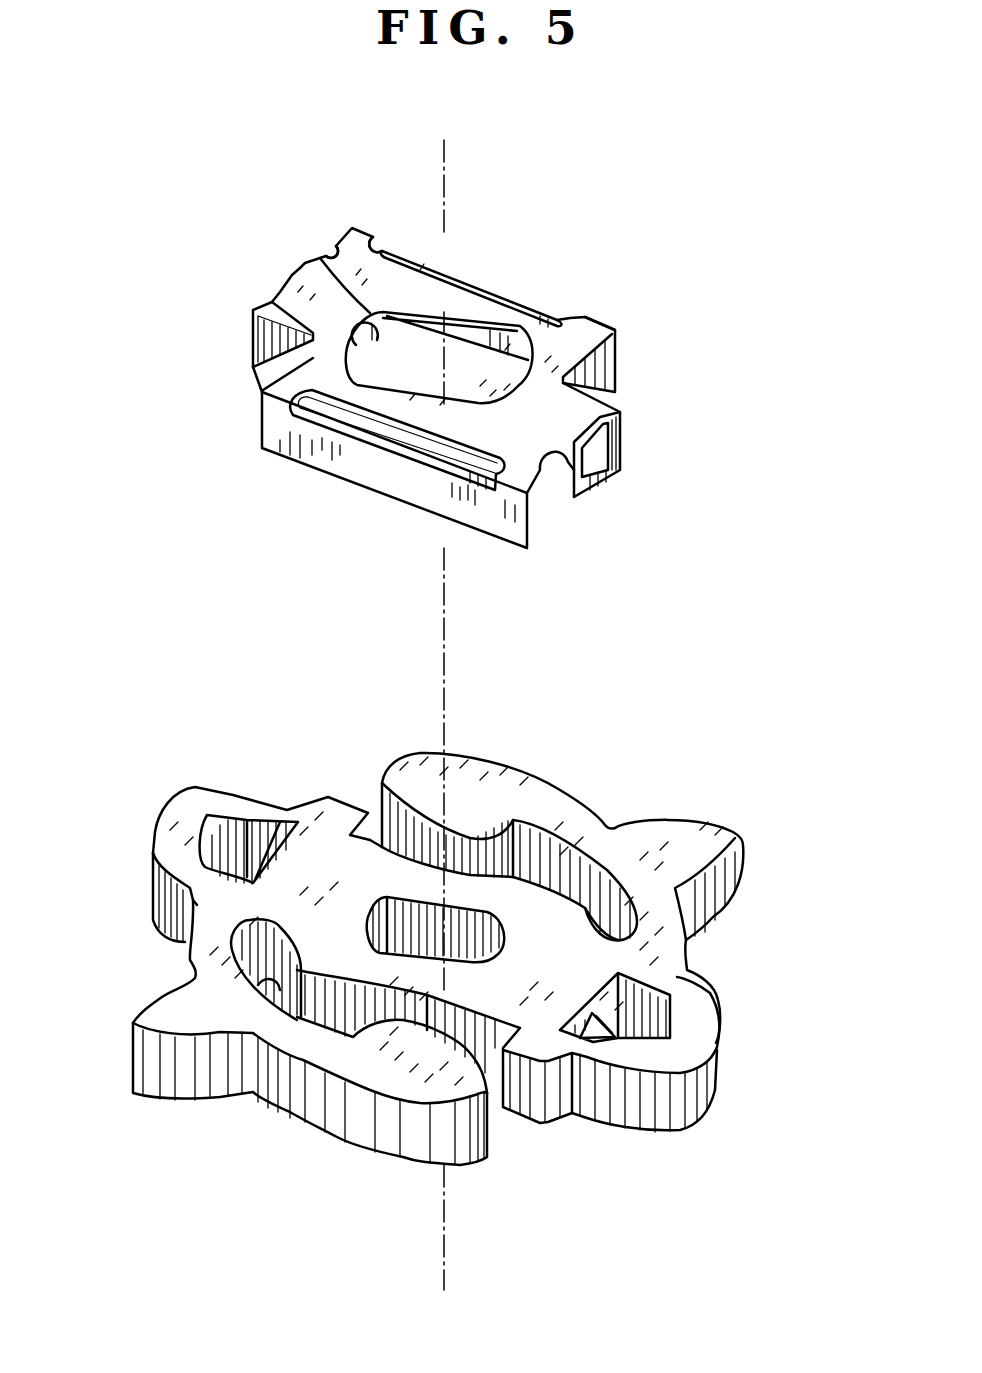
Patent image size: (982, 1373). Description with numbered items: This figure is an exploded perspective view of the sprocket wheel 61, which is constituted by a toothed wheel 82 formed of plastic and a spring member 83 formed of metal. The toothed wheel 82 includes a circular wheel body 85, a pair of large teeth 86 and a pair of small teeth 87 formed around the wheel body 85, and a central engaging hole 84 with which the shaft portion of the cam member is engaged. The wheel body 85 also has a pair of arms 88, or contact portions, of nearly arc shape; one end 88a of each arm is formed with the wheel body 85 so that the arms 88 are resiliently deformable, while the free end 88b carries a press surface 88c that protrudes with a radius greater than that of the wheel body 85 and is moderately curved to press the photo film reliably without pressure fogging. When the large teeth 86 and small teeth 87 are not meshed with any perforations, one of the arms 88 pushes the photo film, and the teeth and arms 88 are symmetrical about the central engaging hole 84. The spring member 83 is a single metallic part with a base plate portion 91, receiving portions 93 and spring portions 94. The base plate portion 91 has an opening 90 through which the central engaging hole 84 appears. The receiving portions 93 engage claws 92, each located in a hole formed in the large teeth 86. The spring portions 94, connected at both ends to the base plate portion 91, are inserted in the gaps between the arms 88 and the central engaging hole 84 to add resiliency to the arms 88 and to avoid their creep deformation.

The sprocket wheel 61 is at (723, 558).
The toothed wheel 82 is at (600, 755).
The spring member 83 is at (590, 553).
The central engaging hole 84 is at (473, 942).
The wheel body 85 is at (508, 1000).
The large teeth 86 is at (703, 1078).
The small teeth 87 is at (182, 1085).
The arms 88 is at (272, 1150).
The one end of the arms 88a is at (210, 910).
The free end of the arms 88b is at (495, 1133).
The press surface 88c is at (388, 1140).
The opening 90 is at (324, 256).
The base plate portion 91 is at (395, 278).
The claws 92 is at (597, 1023).
The receiving portions 93 is at (603, 440).
The spring portions 94 is at (387, 482).